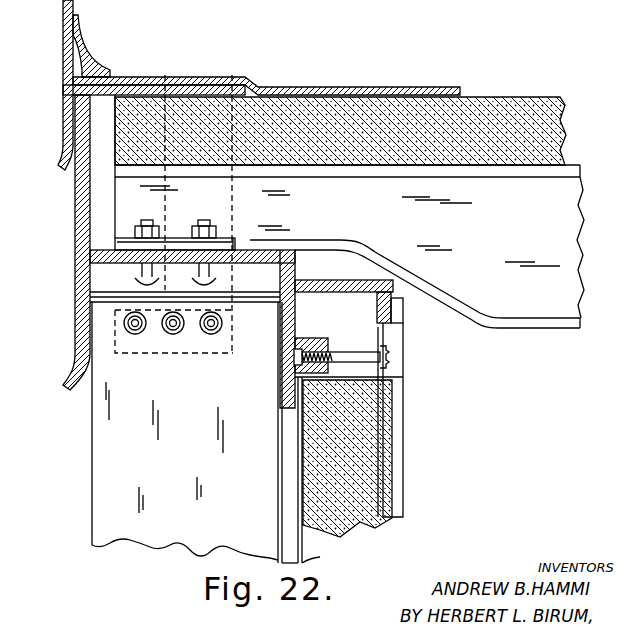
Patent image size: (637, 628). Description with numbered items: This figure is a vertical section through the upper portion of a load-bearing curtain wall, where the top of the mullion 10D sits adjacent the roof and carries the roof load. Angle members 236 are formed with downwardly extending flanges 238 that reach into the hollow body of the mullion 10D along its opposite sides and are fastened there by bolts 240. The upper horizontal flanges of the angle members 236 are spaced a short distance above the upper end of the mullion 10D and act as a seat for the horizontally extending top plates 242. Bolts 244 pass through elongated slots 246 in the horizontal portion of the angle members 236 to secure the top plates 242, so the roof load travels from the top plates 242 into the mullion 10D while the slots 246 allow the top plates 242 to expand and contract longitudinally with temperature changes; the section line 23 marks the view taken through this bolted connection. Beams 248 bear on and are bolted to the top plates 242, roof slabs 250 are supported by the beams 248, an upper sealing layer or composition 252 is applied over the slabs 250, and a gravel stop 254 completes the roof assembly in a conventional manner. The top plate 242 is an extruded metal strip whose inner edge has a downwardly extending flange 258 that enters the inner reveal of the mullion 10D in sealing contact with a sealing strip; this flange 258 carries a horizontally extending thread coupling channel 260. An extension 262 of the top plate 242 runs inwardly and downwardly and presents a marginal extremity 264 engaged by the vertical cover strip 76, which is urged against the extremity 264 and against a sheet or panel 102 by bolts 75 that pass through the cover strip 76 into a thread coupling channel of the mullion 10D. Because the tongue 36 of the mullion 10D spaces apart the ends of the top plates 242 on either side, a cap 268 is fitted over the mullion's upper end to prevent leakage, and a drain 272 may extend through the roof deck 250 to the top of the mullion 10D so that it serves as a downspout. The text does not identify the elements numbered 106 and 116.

The mullion 10D is at (117, 458).
The section line 23- 23 is at (430, 72).
The tongue 36 is at (327, 563).
The bolts 75 is at (367, 356).
The vertical cover strip 76 is at (404, 460).
The sheet or panel 102 is at (363, 430).
The channel 106 is at (312, 540).
The plate 116 is at (300, 423).
The angle members 236 is at (122, 270).
The downwardly extending flanges 238 is at (152, 345).
The bolts 240 is at (210, 332).
The top plates 242 is at (287, 252).
The bolts 244 is at (150, 222).
The elongated slots 246 is at (233, 247).
The beams 248 is at (505, 320).
The roof slabs 250 is at (492, 123).
The upper sealing layer or composition 252 is at (279, 87).
The gravel stop 254 is at (63, 88).
The downwardly extending flange 258 is at (280, 357).
The thread coupling channel 260 is at (310, 340).
The extension 262 is at (352, 280).
The marginal extremity 264 is at (403, 313).
The cap 268 is at (93, 296).
The drain 272 is at (171, 200).